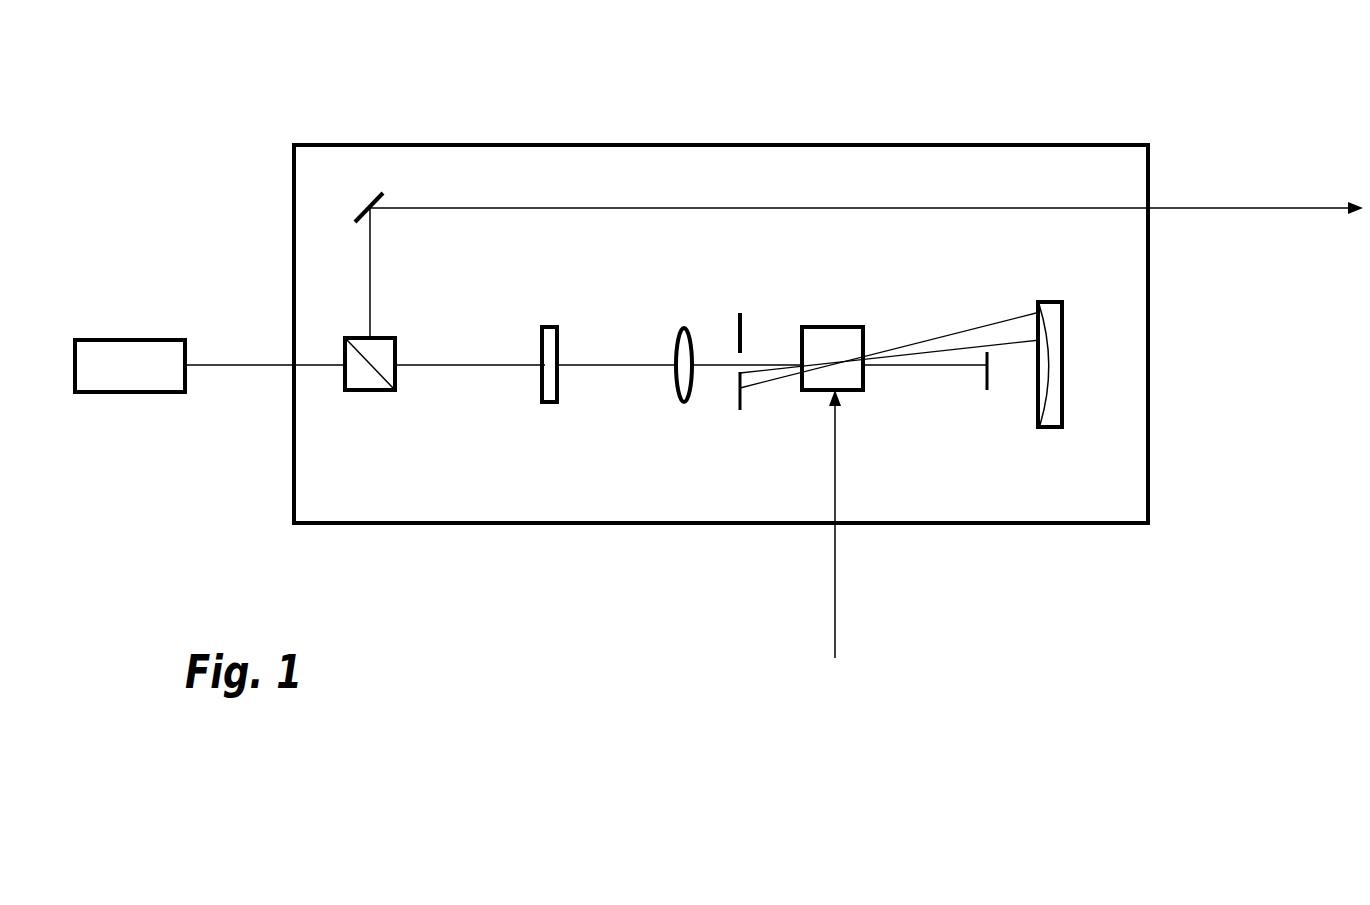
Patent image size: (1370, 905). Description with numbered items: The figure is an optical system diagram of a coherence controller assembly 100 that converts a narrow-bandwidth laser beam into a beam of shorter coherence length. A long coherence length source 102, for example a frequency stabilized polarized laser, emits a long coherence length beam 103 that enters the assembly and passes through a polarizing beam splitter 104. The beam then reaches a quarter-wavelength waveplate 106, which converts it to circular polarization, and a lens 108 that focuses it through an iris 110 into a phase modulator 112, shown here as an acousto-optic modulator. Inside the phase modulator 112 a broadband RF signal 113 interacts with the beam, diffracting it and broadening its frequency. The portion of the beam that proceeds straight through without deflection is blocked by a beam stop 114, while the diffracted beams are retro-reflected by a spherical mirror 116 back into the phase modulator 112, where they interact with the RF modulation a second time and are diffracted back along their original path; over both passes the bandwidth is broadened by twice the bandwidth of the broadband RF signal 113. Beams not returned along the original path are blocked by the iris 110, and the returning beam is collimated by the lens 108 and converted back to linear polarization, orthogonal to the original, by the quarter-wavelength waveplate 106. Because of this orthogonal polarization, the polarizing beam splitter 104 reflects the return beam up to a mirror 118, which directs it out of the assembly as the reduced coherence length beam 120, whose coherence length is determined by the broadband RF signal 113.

The coherence controller assembly 100 is at (1083, 145).
The long coherence length source 102 is at (148, 392).
The long coherence length beam 103 is at (258, 365).
The polarizing beam splitter 104 is at (378, 390).
The quarter-wavelength waveplate 106 is at (545, 402).
The lens 108 is at (680, 402).
The iris 110 is at (740, 410).
The phase modulator 112 is at (840, 327).
The broadband RF signal 113 is at (835, 593).
The beam stop 114 is at (987, 390).
The spherical mirror 116 is at (1047, 427).
The mirror 118 is at (396, 190).
The reduced coherence length beam 120 is at (1237, 207).